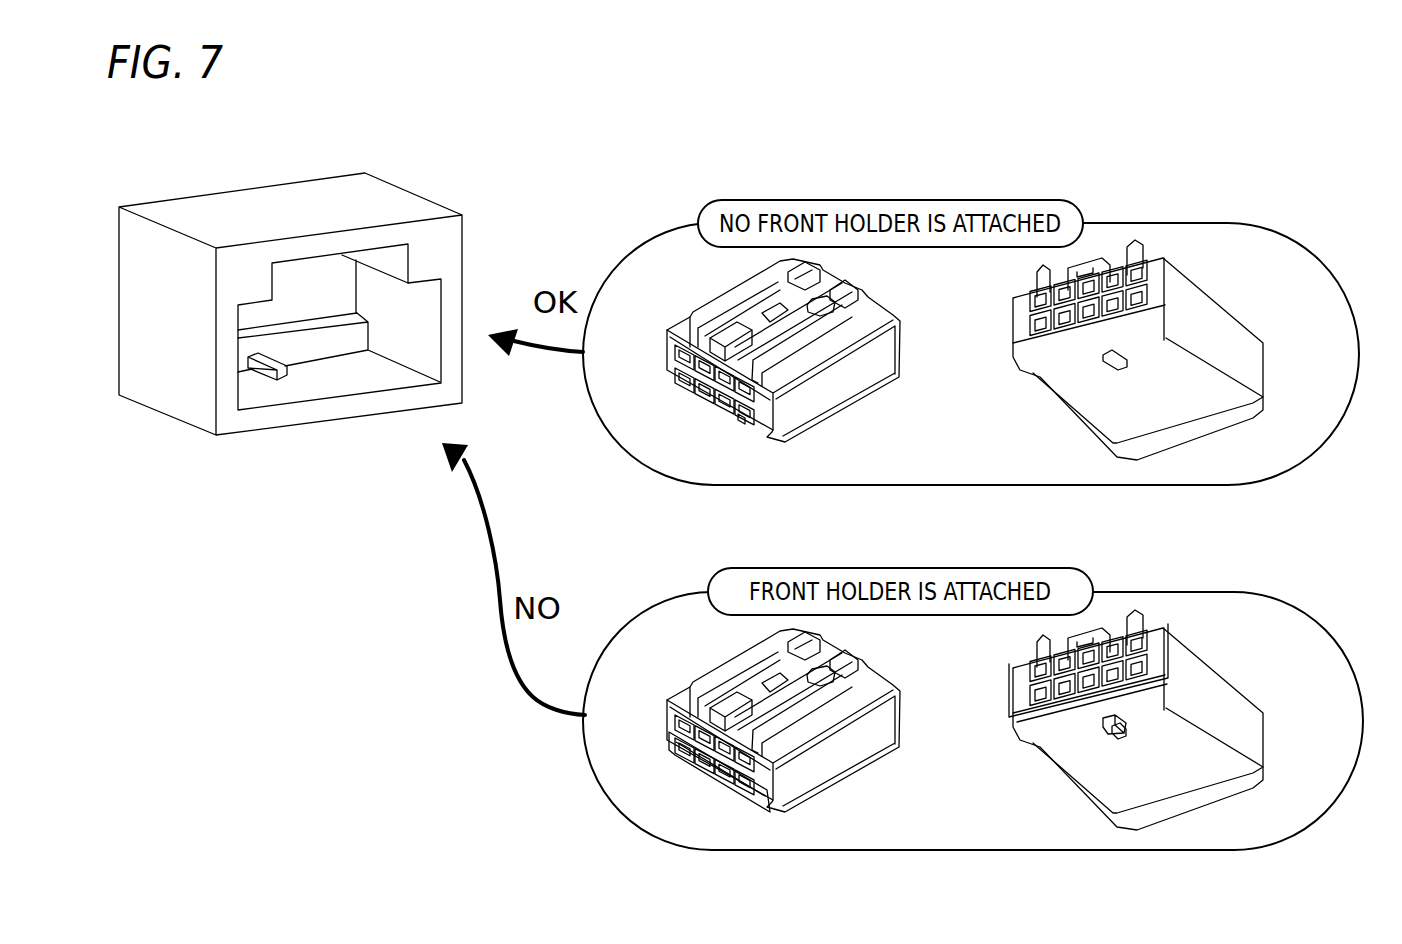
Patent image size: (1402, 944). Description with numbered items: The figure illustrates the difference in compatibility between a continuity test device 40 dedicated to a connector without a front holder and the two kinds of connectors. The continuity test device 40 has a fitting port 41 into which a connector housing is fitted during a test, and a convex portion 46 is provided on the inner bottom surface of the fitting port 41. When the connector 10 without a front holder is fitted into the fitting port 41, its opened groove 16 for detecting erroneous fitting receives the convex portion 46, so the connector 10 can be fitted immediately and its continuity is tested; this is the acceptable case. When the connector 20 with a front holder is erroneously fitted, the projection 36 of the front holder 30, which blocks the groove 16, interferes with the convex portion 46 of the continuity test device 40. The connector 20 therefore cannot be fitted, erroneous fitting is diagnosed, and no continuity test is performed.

The connector without a front holder 10 is at (903, 306).
The groove for detecting erroneous fitting 16 is at (740, 418).
The connector with a front holder 20 is at (898, 672).
The front holder 30 is at (670, 745).
The projection 36 is at (1107, 728).
The continuity test device 40 is at (382, 150).
The fitting port 41 is at (346, 381).
The convex portion 46 is at (264, 380).